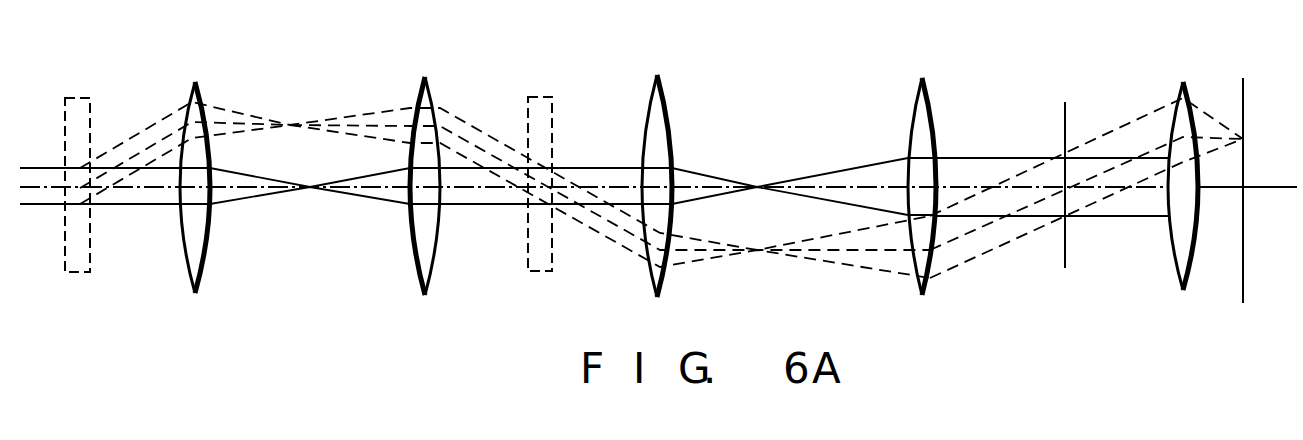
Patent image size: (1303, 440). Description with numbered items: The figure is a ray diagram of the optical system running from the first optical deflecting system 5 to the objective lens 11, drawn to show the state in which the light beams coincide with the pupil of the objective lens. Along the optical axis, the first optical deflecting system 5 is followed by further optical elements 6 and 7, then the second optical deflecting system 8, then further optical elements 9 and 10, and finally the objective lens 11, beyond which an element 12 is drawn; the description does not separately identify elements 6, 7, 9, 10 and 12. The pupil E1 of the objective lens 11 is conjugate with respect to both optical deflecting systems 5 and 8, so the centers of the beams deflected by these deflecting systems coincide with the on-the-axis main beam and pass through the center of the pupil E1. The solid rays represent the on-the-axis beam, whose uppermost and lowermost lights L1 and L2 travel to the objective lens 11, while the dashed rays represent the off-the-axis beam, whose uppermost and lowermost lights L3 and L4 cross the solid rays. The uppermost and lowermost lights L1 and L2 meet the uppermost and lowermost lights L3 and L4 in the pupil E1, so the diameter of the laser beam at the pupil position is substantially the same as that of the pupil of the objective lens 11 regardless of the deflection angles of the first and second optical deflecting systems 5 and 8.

The optical deflecting system 5 is at (80, 98).
The first lens 6 is at (196, 88).
The second lens 7 is at (425, 86).
The optical deflecting system 8 is at (541, 97).
The third lens 9 is at (657, 84).
The fourth lens 10 is at (922, 84).
The objective lens 11 is at (1183, 86).
The image plane 12 is at (1243, 92).
The pupil E1 is at (1065, 102).
The uppermost light of the on-the-axis beam L1 is at (985, 158).
The lowermost light of the on-the-axis beam L2 is at (1112, 216).
The uppermost light of the off-the-axis beam L3 is at (1122, 130).
The lowermost light of the off-the-axis beam L4 is at (1005, 246).